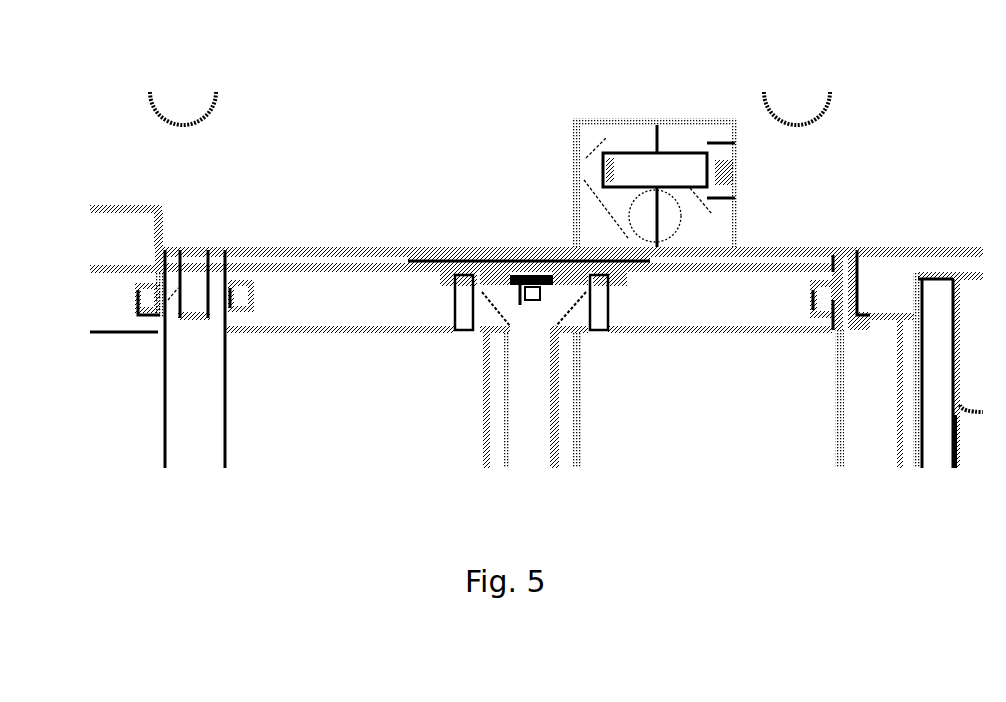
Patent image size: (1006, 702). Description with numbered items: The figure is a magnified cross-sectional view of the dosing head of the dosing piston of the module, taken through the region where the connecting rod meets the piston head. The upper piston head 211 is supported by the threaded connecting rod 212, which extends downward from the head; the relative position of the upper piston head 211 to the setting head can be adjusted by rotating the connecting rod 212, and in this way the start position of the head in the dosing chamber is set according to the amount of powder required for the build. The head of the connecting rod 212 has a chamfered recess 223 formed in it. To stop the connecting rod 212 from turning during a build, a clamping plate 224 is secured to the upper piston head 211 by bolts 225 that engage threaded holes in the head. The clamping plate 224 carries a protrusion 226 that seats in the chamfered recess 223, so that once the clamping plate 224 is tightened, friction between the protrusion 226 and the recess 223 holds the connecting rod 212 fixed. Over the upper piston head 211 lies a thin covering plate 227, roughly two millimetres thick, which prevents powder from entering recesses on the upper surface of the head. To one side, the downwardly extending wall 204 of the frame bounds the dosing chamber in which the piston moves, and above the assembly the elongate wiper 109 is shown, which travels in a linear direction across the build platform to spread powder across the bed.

The elongate wiper 109 is at (608, 136).
The clamping plate 224 is at (502, 261).
The covering plate 227 is at (783, 262).
The upper piston head 211 is at (323, 306).
The protrusion 226 is at (519, 299).
The chamfered recess 223 is at (538, 313).
The bolts 225 is at (601, 300).
The threaded connecting rod 212 is at (522, 392).
The downwardly extending wall 204 is at (873, 449).